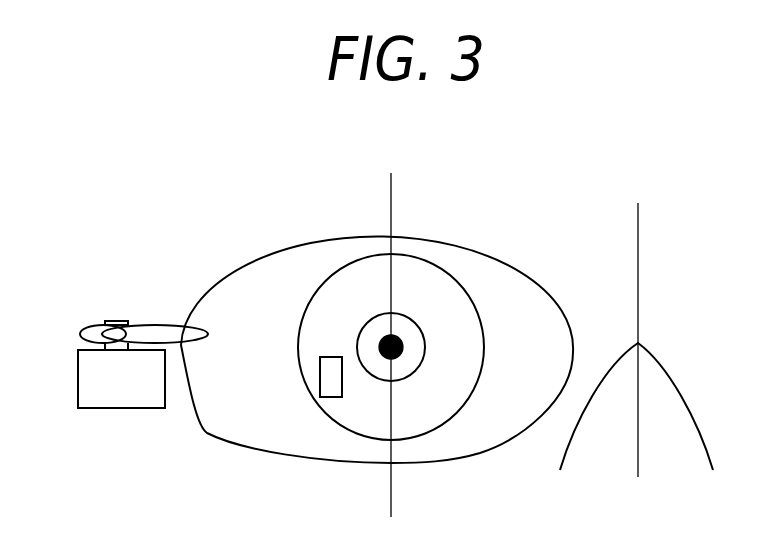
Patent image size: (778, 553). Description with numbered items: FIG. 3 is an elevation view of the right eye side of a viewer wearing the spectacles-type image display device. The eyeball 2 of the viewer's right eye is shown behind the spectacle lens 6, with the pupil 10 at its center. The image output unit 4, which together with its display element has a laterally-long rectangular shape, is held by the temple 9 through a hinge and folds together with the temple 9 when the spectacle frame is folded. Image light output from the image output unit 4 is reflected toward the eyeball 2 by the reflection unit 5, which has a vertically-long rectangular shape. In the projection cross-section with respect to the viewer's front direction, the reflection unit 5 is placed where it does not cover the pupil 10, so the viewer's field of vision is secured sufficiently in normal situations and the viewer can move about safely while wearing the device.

The eyeball 2 is at (407, 268).
The image output unit 4 is at (110, 398).
The reflection unit 5 is at (325, 365).
The spectacle lens 6 is at (468, 453).
The temple 9 is at (83, 330).
The pupil 10 is at (400, 336).